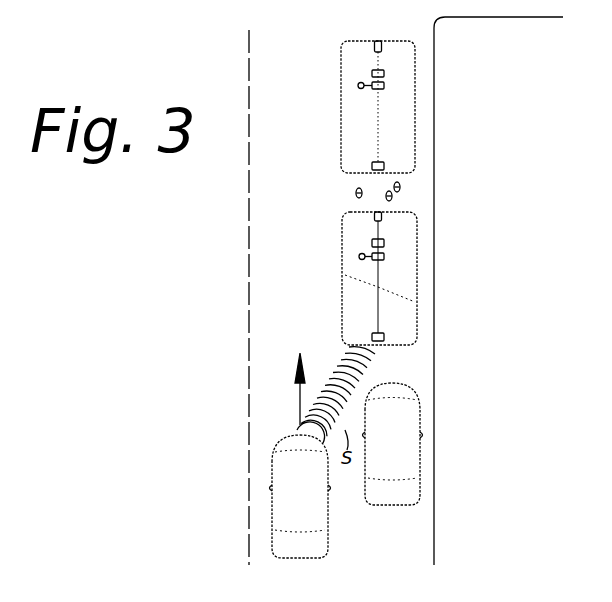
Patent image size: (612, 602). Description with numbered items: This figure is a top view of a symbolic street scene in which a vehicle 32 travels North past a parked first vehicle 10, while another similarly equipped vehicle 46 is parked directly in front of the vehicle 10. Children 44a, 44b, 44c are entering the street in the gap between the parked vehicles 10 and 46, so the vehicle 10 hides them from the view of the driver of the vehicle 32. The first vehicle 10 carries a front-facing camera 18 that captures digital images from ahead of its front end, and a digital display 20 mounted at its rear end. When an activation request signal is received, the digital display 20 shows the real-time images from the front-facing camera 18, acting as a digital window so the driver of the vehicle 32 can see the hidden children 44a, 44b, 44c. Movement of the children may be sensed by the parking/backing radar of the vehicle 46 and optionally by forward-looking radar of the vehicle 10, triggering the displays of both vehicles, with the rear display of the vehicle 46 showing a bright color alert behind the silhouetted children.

The similarly equipped vehicle 46 is at (341, 68).
The child 44a is at (355, 193).
The child 44b is at (392, 199).
The child 44c is at (400, 190).
The first vehicle 10 is at (387, 296).
The front-facing camera 18 is at (382, 218).
The digital display 20 is at (400, 343).
The vehicle 32 is at (300, 496).